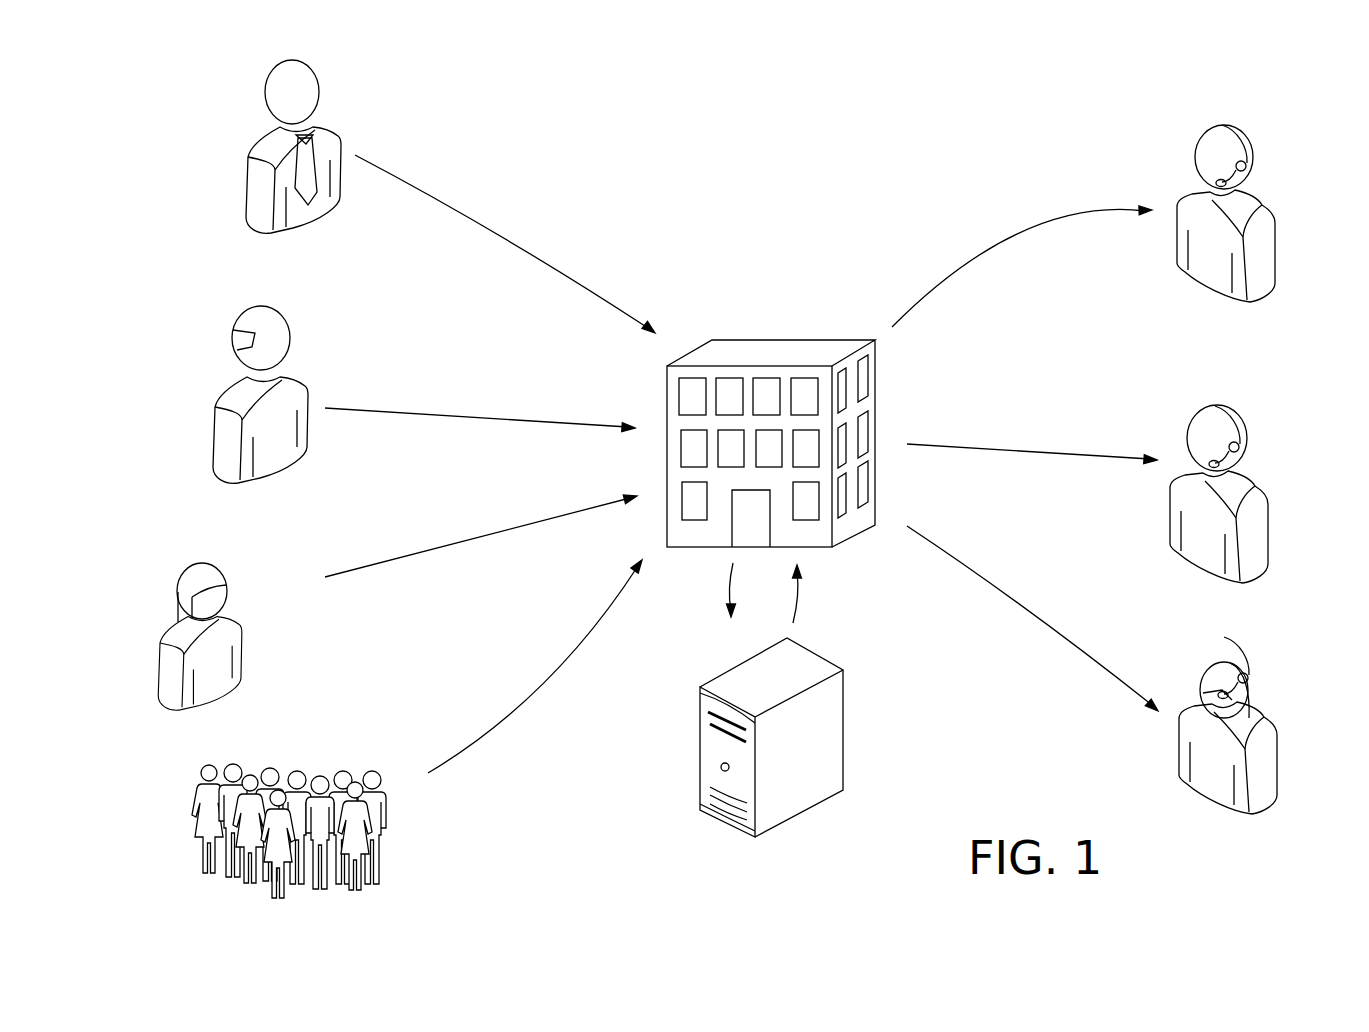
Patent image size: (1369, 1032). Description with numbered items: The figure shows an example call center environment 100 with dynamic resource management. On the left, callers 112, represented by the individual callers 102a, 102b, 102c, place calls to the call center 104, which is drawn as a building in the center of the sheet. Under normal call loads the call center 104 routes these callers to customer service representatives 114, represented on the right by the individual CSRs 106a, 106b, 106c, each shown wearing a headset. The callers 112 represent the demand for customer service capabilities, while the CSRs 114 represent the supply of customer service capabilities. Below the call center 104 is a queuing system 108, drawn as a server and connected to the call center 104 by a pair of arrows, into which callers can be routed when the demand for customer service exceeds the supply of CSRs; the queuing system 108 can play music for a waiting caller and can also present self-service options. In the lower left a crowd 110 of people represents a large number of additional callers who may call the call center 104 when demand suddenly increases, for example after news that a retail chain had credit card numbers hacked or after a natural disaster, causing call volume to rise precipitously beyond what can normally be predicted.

The call center environment 100 is at (1048, 117).
The individual caller 102a is at (400, 141).
The individual caller 102b is at (349, 334).
The individual caller 102c is at (282, 571).
The call center 104 is at (742, 342).
The customer service representative 106a is at (1272, 148).
The customer service representative 106b is at (1269, 396).
The customer service representative 106c is at (1281, 654).
The queuing system 108 is at (844, 710).
The crowd 110 is at (375, 741).
The callers 112 is at (617, 174).
The customer service representatives 114 is at (924, 190).